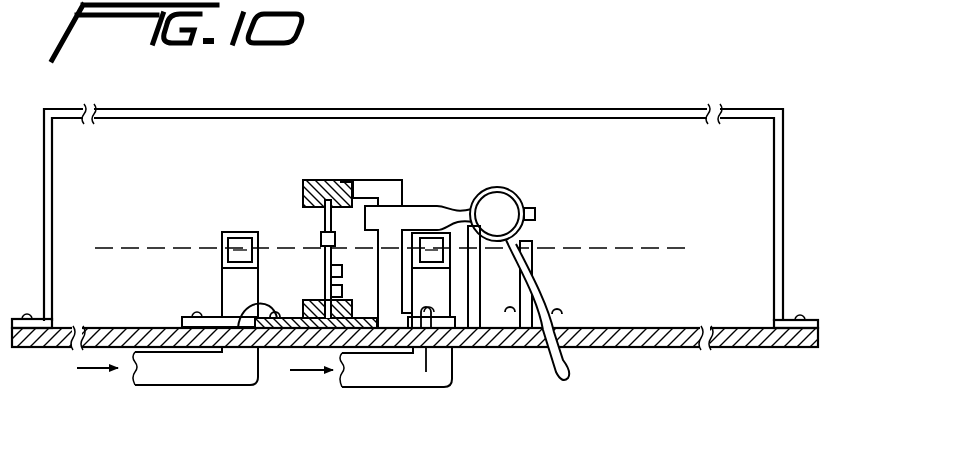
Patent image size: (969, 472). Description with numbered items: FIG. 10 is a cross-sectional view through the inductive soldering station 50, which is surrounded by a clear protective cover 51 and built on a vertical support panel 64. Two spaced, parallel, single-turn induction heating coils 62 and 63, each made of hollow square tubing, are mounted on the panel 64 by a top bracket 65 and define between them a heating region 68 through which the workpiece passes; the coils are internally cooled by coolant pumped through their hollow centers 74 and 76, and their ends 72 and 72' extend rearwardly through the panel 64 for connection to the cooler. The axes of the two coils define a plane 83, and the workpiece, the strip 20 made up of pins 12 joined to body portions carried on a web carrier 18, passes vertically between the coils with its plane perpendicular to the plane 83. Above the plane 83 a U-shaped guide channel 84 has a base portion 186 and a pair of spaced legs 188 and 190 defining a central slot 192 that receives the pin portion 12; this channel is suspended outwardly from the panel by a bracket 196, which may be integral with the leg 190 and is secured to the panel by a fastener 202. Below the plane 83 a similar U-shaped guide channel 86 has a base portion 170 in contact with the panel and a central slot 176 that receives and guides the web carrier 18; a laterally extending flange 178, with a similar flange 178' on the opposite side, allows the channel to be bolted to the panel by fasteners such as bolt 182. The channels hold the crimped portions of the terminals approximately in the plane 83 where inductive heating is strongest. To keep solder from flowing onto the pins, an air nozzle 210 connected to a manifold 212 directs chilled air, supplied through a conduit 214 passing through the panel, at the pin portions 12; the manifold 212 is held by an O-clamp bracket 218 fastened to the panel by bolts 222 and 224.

The pin 12 is at (299, 245).
The web carrier 18 is at (330, 272).
The strip of terminals 20 is at (320, 240).
The soldering station 50 is at (425, 268).
The protective cover 51 is at (785, 250).
The induction heating coil 62 is at (208, 222).
The induction heating coil 63 is at (540, 338).
The vertical support panel 64 is at (633, 350).
The top bracket 65 is at (183, 318).
The heating region 68 is at (252, 220).
The coil end 72 is at (167, 389).
The coil end 72' is at (371, 409).
The hollow center 74 is at (235, 248).
The hollow center 76 is at (510, 243).
The plane 83 is at (670, 249).
The guide channel 84 is at (318, 178).
The guide channel 86 is at (270, 328).
The base portion 170 is at (271, 385).
The central slot 176 is at (272, 332).
The flange 178 is at (271, 394).
The flange 178' is at (363, 407).
The fastener 182 is at (240, 345).
The base portion 186 is at (328, 180).
The leg 188 is at (305, 180).
The leg 190 is at (375, 192).
The central slot 192 is at (345, 192).
The bracket 196 is at (390, 218).
The fastener 202 is at (426, 372).
The air nozzle 210 is at (498, 212).
The manifold 212 is at (540, 196).
The conduit 214 is at (565, 323).
The O-clamp bracket 218 is at (512, 330).
The bolt 222 is at (483, 330).
The bolt 224 is at (566, 375).